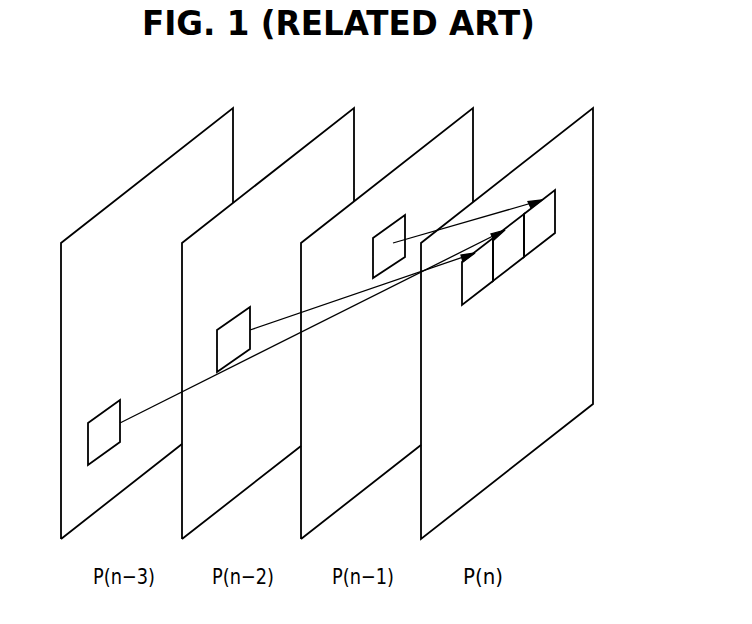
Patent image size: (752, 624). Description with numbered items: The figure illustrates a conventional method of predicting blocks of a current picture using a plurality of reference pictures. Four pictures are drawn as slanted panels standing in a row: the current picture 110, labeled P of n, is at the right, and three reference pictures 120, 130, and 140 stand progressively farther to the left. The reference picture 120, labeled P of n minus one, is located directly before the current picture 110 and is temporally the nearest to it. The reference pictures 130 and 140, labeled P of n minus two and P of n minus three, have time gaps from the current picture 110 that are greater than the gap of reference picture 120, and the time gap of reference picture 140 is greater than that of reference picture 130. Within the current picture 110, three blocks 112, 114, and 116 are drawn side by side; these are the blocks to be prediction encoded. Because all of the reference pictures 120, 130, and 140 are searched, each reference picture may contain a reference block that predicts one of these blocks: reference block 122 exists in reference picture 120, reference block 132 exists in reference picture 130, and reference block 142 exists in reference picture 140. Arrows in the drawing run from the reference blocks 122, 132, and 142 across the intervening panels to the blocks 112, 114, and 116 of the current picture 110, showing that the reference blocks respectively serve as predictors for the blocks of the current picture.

The current picture 110 is at (562, 130).
The block of current picture 112 is at (545, 243).
The block of current picture 114 is at (513, 267).
The block of current picture 116 is at (472, 307).
The reference picture 120 is at (433, 140).
The reference block 122 is at (402, 217).
The reference picture 130 is at (313, 140).
The reference block 132 is at (234, 317).
The reference picture 140 is at (166, 159).
The reference block 142 is at (105, 410).